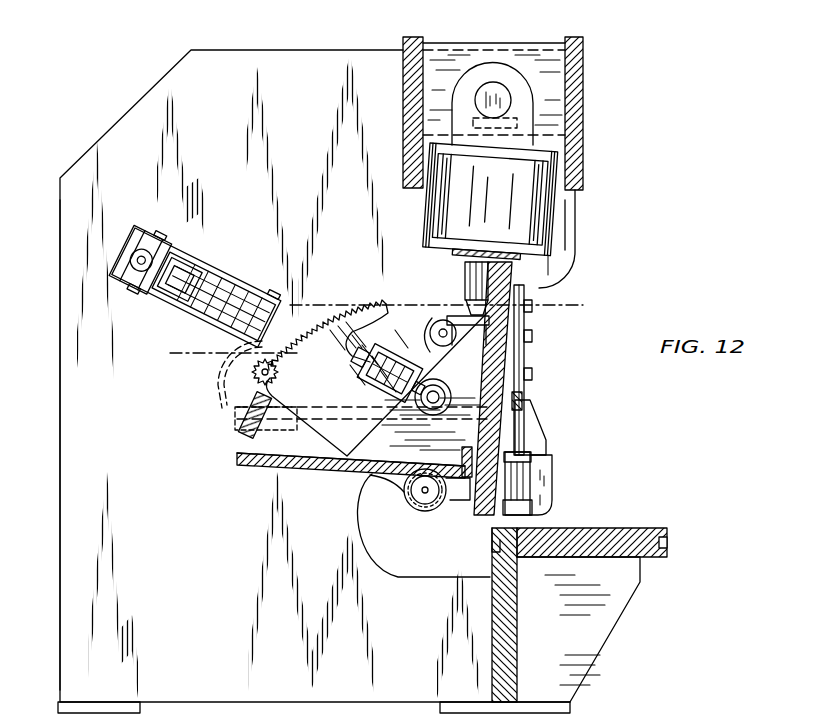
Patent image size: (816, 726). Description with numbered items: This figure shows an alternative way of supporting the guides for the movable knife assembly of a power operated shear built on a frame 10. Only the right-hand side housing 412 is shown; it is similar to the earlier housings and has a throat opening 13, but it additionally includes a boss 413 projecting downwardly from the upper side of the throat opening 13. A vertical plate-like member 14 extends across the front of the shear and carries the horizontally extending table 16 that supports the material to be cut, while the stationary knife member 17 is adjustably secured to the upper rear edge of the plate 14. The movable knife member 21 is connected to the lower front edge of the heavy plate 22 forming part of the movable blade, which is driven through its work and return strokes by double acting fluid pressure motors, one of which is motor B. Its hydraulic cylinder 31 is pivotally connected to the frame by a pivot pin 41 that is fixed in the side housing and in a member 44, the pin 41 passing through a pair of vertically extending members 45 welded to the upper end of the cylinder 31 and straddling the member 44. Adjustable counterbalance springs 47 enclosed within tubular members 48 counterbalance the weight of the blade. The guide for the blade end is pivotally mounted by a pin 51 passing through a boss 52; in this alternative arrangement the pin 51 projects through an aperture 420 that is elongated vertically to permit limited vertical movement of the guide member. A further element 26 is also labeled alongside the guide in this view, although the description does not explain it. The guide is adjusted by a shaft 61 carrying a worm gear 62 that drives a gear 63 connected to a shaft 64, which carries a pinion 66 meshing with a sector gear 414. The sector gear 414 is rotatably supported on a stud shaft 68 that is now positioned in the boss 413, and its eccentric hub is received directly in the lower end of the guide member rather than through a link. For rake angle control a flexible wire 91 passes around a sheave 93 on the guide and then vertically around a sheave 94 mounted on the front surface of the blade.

The frame 10 is at (57, 370).
The side housing 412 is at (138, 105).
The member 44 is at (470, 48).
The vertically extending members 45 is at (503, 63).
The pivot pin 41 is at (511, 101).
The hydraulic cylinder 31 is at (445, 216).
The plate 22 is at (492, 280).
The apertures 420 is at (466, 305).
The boss 52 is at (432, 325).
The pin 51 is at (440, 337).
The sheave 94 is at (528, 323).
The guide rail 26 is at (526, 350).
The flexible wire 91 is at (526, 384).
The sheave 93 is at (528, 404).
The openings 13 is at (170, 353).
The gear 63 is at (238, 345).
The pinion 66 is at (254, 373).
The shaft 64 is at (242, 386).
The worm gear 62 is at (290, 436).
The shaft 61 is at (376, 384).
The sector gears 414 is at (348, 436).
The fluid pressure motor B is at (256, 470).
The stud shaft 68 is at (412, 498).
The boss 413 is at (421, 521).
The movable knife member 21 is at (486, 522).
The stationary knife member 17 is at (495, 550).
The table 16 is at (632, 528).
The plate-like member 14 is at (518, 641).
The counterbalance springs 47 is at (240, 283).
The tubular members 48 is at (257, 290).